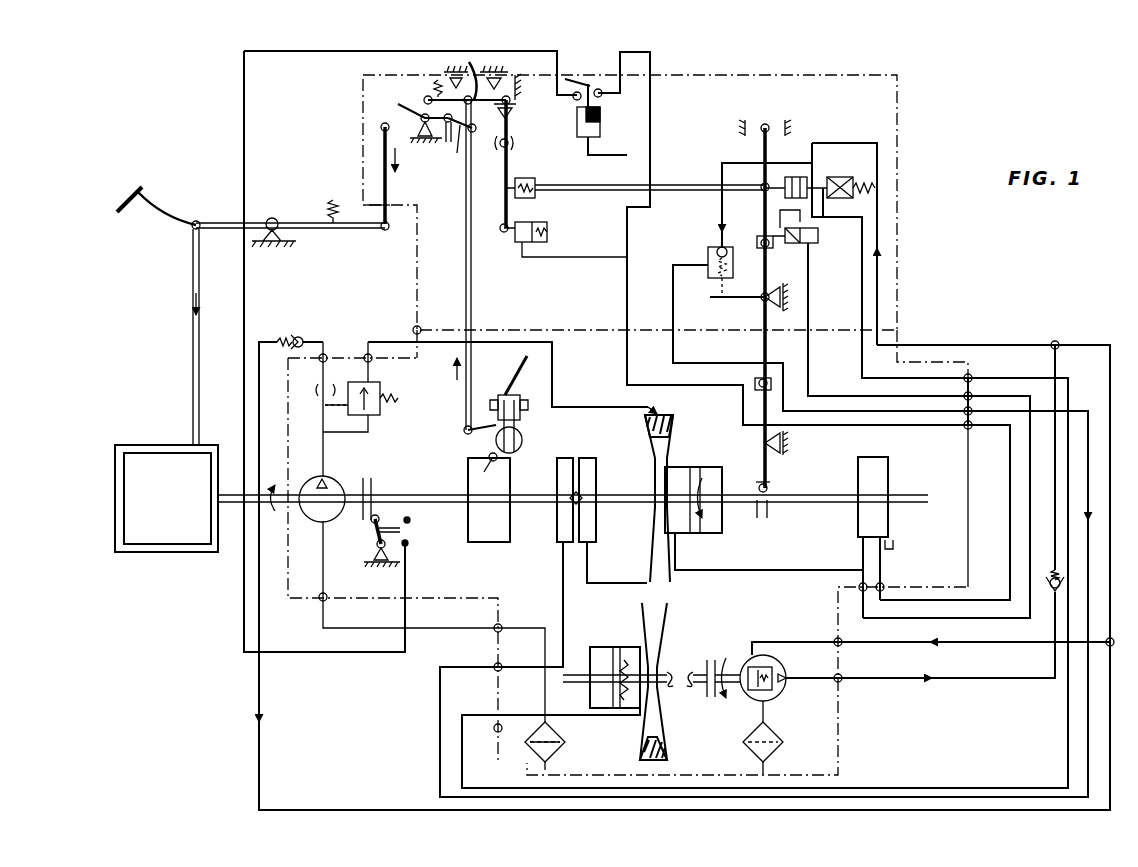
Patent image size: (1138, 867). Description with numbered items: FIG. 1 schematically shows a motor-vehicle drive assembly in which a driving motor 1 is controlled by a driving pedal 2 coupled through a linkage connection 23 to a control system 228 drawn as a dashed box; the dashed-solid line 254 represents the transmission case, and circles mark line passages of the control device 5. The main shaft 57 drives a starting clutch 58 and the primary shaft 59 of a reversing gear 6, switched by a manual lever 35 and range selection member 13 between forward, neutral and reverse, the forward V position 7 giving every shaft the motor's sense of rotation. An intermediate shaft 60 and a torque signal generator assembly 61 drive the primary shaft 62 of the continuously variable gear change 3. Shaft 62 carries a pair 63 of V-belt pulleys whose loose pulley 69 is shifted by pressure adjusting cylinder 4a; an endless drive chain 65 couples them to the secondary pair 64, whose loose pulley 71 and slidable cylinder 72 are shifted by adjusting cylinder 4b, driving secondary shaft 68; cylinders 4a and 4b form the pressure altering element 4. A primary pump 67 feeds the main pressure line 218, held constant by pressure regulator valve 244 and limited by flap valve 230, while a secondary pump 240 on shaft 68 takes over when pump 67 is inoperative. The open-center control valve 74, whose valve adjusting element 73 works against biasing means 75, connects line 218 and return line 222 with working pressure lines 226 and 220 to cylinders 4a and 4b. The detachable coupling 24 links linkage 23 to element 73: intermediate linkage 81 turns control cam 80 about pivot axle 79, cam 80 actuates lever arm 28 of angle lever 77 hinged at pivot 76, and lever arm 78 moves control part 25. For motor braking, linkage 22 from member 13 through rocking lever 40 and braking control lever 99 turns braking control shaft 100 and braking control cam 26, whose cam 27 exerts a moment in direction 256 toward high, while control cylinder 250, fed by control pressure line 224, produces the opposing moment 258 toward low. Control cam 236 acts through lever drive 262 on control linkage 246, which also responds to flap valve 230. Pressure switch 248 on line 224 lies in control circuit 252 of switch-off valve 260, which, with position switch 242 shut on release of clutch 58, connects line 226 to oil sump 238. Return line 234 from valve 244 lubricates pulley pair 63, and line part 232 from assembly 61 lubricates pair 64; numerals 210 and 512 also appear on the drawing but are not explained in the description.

The driving motor 1 is at (171, 563).
The driving pedal 2 is at (157, 209).
The continuously variable gear change 3 is at (714, 607).
The pressure altering element 4 is at (714, 537).
The pressure adjusting cylinder 4a is at (710, 482).
The pressure adjusting cylinder 4b is at (633, 704).
The control device 5 is at (889, 473).
The reversing gear 6 is at (484, 547).
The V position 7 is at (705, 212).
The range selection member 13 is at (527, 423).
The linkage 22 is at (472, 283).
The linkage connection 23 is at (384, 233).
The detachable coupling 24 is at (400, 92).
The control part 25 is at (518, 170).
The braking control cam 26 is at (438, 81).
The cam 27 is at (458, 74).
The lever arm 28 is at (510, 143).
The manual lever 35 is at (528, 358).
The rocking lever 40 is at (476, 436).
The main shaft 57 is at (232, 504).
The starting clutch 58 is at (378, 488).
The primary shaft 59 is at (440, 504).
The intermediate shaft 60 is at (527, 504).
The torque signal generator assembly 61 is at (576, 455).
The primary shaft of gear change 62 is at (632, 504).
The pair of V-belt pulleys on the primary side 63 is at (644, 443).
The pair of V-belt pulleys on the secondary side 64 is at (669, 738).
The endless drive chain 65 is at (668, 418).
The primary pump 67 is at (334, 486).
The secondary shaft 68 is at (681, 685).
The loose pulley 69 is at (665, 438).
The loose pulley 71 is at (641, 618).
The axially slidable cylinder 72 is at (631, 644).
The valve adjusting element 73 is at (770, 186).
The control valve 74 is at (854, 168).
The biasing means 75 is at (862, 190).
The stationary pivot 76 is at (527, 104).
The angle lever 77 is at (595, 148).
The lever arm 78 is at (515, 117).
The stationary pivot axle 79 is at (424, 140).
The control cam 80 is at (404, 105).
The intermediate linkage 81 is at (382, 156).
The braking control lever 99 is at (522, 455).
The braking control shaft 100 is at (449, 138).
The spring 210 is at (333, 205).
The main pressure line 218 is at (1082, 342).
The working pressure line 220 is at (1064, 696).
The return line 222 is at (1085, 753).
The control pressure line 224 is at (884, 563).
The working pressure line 226 is at (760, 565).
The control system 228 is at (903, 116).
The flap valve 230 is at (706, 253).
The line part 232 is at (597, 583).
The return line 234 is at (608, 400).
The control cam 236 is at (787, 514).
The oil sump 238 is at (677, 748).
The secondary pump 240 is at (780, 700).
The position switch 242 is at (375, 532).
The pressure regulator valve 244 is at (359, 377).
The control linkage 246 is at (757, 307).
The pressure switch 248 is at (604, 126).
The control cylinder 250 is at (548, 225).
The control circuit 252 is at (244, 96).
The transmission case 254 is at (934, 360).
The operating direction 256 is at (489, 72).
The control moment direction 258 is at (517, 205).
The switch-off valve 260 is at (817, 246).
The intermediate lever drive 262 is at (775, 482).
The sensor 512 is at (894, 545).